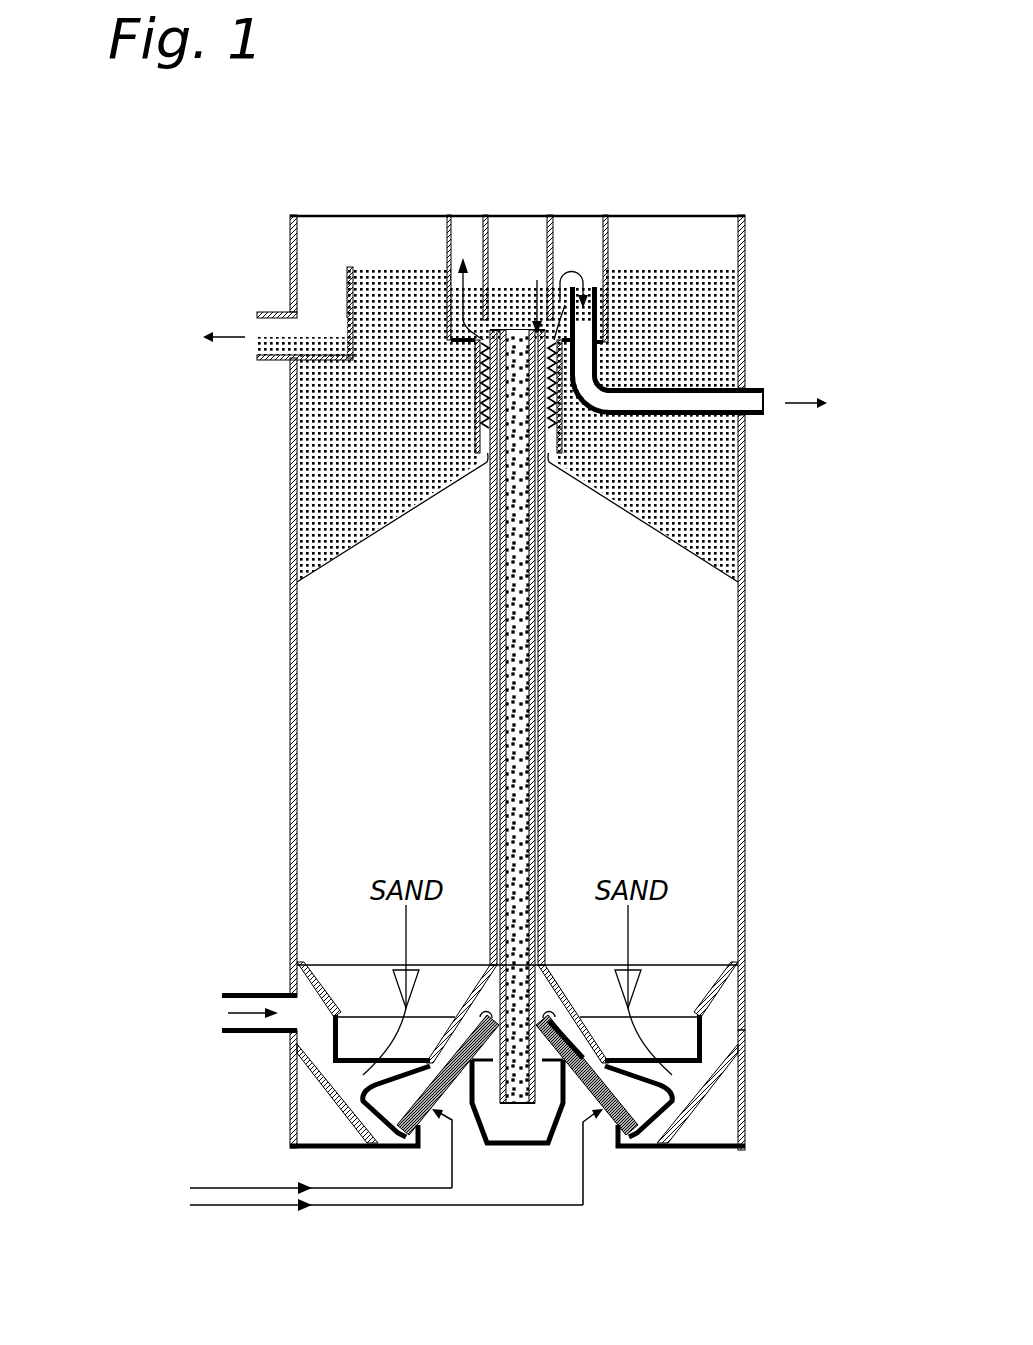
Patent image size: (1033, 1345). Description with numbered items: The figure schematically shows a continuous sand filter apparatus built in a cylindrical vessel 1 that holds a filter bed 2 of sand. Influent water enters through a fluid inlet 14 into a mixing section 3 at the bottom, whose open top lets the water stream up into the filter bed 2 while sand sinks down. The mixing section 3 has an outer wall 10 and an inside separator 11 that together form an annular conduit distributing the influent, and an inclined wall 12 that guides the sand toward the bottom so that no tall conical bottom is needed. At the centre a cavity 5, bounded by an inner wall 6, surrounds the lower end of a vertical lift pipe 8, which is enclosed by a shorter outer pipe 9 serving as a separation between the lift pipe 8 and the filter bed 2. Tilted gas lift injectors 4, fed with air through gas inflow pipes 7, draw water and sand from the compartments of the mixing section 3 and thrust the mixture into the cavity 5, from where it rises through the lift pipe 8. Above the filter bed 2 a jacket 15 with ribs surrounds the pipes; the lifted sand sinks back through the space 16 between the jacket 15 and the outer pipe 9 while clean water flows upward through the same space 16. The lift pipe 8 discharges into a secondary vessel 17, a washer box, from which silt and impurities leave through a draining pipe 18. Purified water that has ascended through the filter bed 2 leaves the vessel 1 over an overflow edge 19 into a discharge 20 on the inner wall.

The vessel 1 is at (746, 816).
The filter bed 2 is at (703, 592).
The mixing section 3 is at (692, 975).
The gas lift injector 4 is at (593, 1053).
The cavity 5 is at (545, 1010).
The inner wall 6 is at (543, 1003).
The gas inflow pipe 7 is at (585, 1163).
The lift pipe 8 is at (520, 668).
The outer pipe 9 is at (548, 652).
The outer wall 10 is at (744, 1038).
The inside separator 11 is at (703, 1032).
The inclined wall 12 is at (706, 1094).
The fluid inlet 14 is at (292, 996).
The jacket 15 is at (560, 410).
The space 16 is at (560, 463).
The secondary vessel 17 is at (583, 233).
The draining pipe 18 is at (762, 398).
The overflow edge 19 is at (348, 267).
The discharge 20 is at (272, 343).